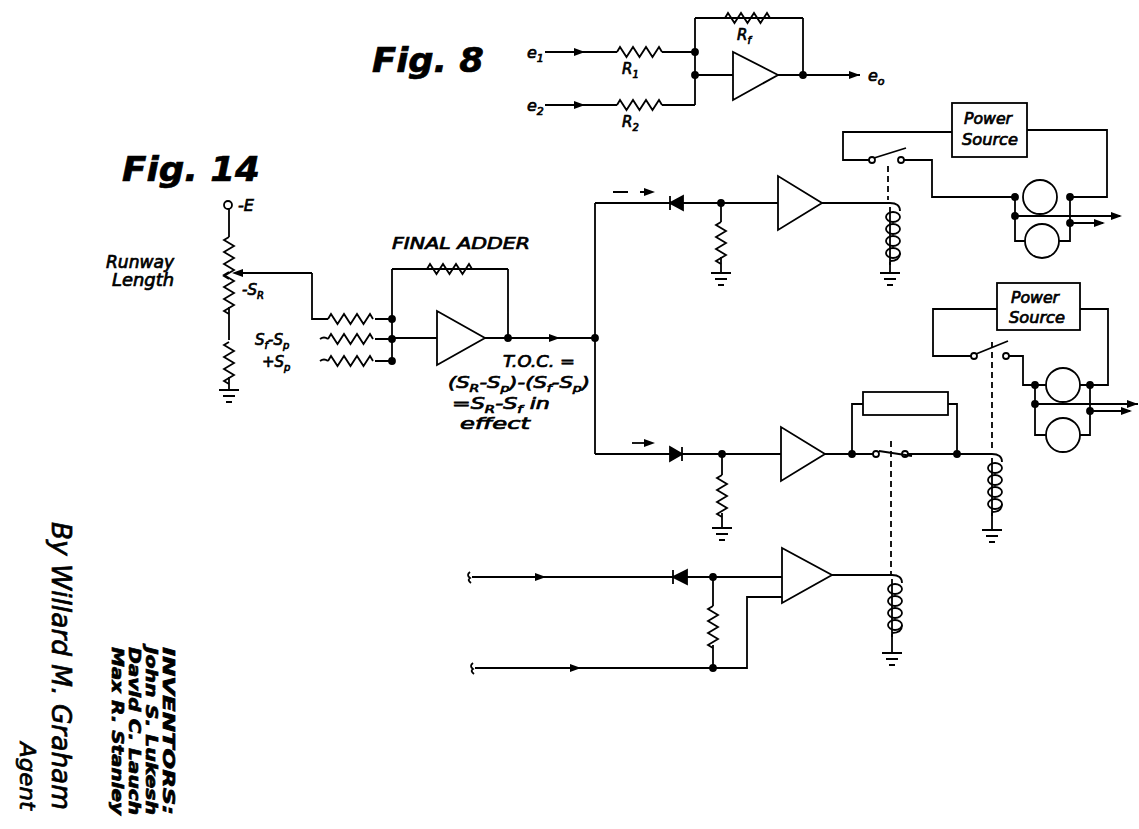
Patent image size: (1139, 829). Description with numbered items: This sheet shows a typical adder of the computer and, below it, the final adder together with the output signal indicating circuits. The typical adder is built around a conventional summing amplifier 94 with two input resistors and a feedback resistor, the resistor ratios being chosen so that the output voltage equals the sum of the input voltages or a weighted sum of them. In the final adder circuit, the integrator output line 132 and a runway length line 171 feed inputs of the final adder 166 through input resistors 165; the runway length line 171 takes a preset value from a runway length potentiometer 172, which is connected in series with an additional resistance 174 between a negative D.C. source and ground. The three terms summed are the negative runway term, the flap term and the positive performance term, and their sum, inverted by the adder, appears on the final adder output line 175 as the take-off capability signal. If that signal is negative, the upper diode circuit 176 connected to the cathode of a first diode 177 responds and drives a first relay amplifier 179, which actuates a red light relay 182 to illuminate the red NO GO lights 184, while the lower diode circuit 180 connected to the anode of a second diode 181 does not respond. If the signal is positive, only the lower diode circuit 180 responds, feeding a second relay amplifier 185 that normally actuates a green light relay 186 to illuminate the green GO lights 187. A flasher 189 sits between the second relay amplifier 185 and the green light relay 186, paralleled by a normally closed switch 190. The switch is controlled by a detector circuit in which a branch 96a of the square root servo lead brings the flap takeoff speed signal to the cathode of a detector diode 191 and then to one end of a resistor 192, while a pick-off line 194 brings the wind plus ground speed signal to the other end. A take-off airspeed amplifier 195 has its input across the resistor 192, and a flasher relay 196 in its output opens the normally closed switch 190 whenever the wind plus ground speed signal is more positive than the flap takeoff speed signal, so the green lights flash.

In FIG. 8, the summing amplifier 94 is at (745, 83).
In FIG. 14, the integrator output line 132 is at (323, 370).
In FIG. 14, the input resistors 165 is at (322, 338).
In FIG. 14, the final adder 166 is at (488, 298).
In FIG. 14, the runway length line 171 is at (314, 296).
In FIG. 14, the runway length potentiometer 172 is at (238, 254).
In FIG. 14, the additional resistance 174 is at (223, 358).
In FIG. 14, the final adder output line 175 is at (530, 338).
In FIG. 14, the upper diode circuit 176 is at (596, 236).
In FIG. 14, the first diode 177 is at (664, 212).
In FIG. 14, the first relay amplifier 179 is at (795, 215).
In FIG. 14, the lower diode circuit 180 is at (597, 412).
In FIG. 14, the second diode 181 is at (668, 462).
In FIG. 14, the red light relay 182 is at (905, 226).
In FIG. 14, the red NO GO lights 184 is at (1062, 172).
In FIG. 14, the second relay amplifier 185 is at (803, 428).
In FIG. 14, the green light relay 186 is at (1000, 482).
In FIG. 14, the green GO lights 187 is at (1075, 368).
In FIG. 14, the flasher 189 is at (889, 392).
In FIG. 14, the normally closed switch 190 is at (914, 466).
In FIG. 14, the branch 96a is at (558, 575).
In FIG. 14, the detector diode 191 is at (670, 571).
In FIG. 14, the resistor 192 is at (705, 627).
In FIG. 14, the pick-off line 194 is at (497, 668).
In FIG. 14, the take-off airspeed amplifier 195 is at (798, 590).
In FIG. 14, the flasher relay 196 is at (900, 600).